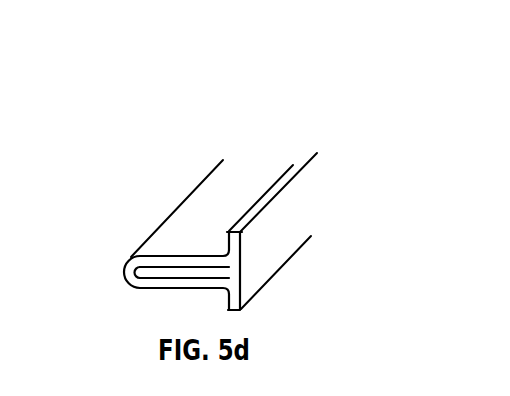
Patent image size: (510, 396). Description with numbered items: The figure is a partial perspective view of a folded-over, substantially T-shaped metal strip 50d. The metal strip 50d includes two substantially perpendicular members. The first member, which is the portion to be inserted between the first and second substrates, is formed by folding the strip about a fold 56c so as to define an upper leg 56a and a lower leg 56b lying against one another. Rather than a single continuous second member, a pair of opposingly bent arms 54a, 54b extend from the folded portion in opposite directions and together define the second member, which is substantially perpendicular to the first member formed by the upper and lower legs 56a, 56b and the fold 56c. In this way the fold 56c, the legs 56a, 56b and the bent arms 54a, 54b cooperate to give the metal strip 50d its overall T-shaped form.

The folded-over substantially T-shaped metal strip 50d is at (149, 169).
The bent arm 54a is at (310, 190).
The bent arm 54b is at (253, 283).
The upper leg 56a is at (157, 228).
The lower leg 56b is at (148, 289).
The fold 56c is at (121, 266).